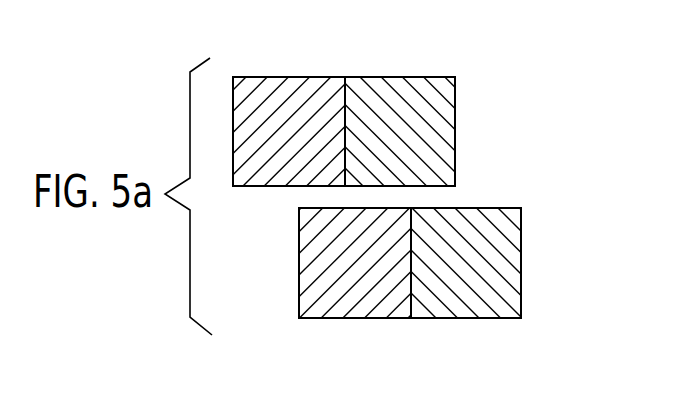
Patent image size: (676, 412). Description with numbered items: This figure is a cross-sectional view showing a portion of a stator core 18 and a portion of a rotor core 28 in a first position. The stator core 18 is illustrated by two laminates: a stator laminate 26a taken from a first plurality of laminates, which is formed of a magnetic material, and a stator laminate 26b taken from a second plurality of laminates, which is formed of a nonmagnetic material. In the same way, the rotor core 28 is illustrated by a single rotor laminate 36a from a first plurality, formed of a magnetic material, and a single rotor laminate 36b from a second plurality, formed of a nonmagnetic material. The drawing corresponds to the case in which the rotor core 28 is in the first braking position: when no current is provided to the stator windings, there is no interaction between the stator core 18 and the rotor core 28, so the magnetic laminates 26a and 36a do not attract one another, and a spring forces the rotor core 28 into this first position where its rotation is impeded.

The stator core 18 is at (483, 121).
The stator laminate from a first plurality of laminates 26a is at (273, 86).
The stator laminate from a second plurality of stator laminates 26b is at (400, 87).
The rotor core 28 is at (539, 264).
The rotor laminate from a first plurality 36a is at (358, 310).
The rotor laminate from a second plurality of laminates 36b is at (463, 310).